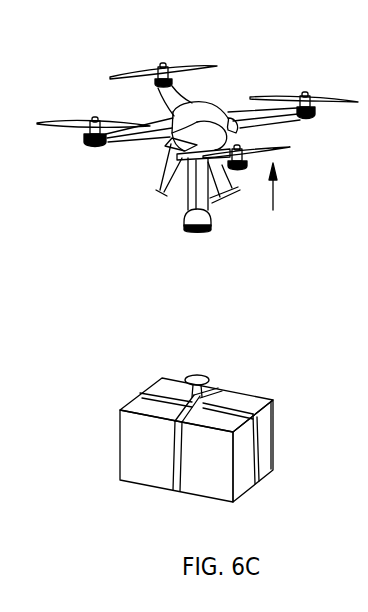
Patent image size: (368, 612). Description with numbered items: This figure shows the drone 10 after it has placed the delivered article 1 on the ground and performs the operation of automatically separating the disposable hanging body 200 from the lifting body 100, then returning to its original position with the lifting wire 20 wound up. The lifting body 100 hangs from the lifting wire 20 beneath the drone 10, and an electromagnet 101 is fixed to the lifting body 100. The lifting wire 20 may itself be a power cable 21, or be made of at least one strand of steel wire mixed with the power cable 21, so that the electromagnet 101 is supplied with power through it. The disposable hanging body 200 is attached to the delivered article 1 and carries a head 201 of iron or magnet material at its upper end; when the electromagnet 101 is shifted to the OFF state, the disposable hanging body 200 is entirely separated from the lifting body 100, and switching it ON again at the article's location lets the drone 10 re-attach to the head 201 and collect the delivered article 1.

The drone 10 is at (235, 70).
The lifting wire 20 is at (188, 191).
The power cable 21 is at (180, 175).
The lifting body 100 is at (187, 228).
The electromagnet 101 is at (212, 227).
The delivered article 1 is at (128, 445).
The disposable hanging body 200 is at (221, 371).
The head 201 is at (190, 374).